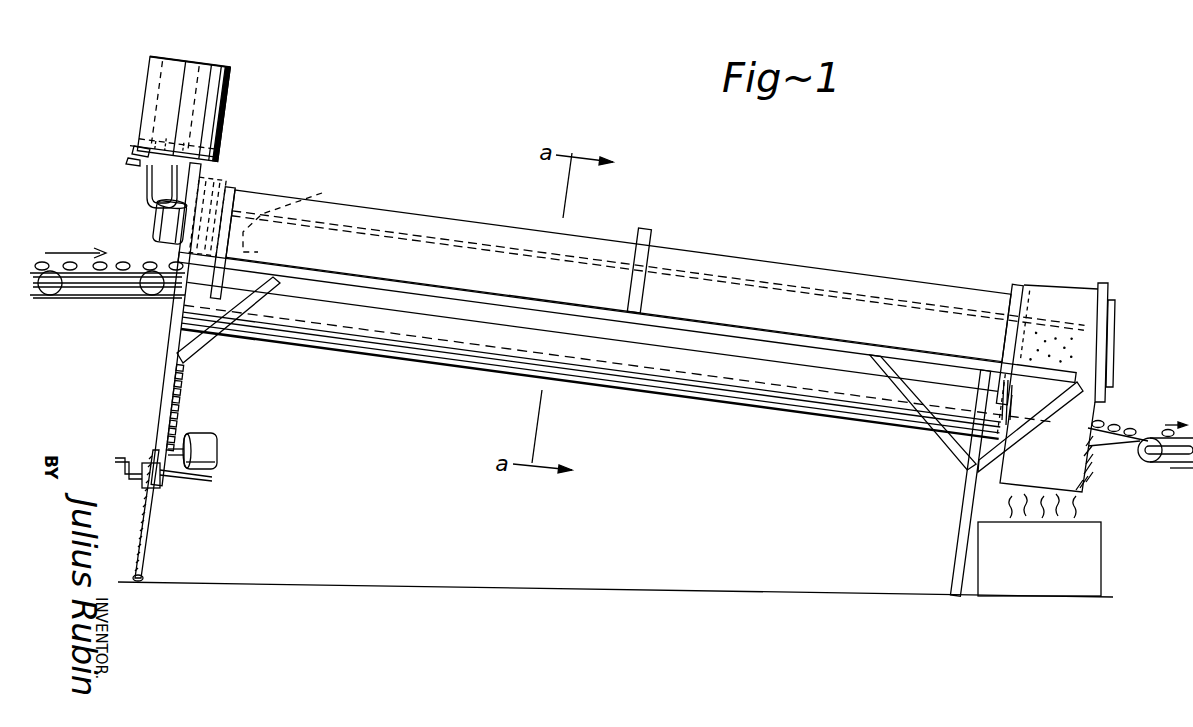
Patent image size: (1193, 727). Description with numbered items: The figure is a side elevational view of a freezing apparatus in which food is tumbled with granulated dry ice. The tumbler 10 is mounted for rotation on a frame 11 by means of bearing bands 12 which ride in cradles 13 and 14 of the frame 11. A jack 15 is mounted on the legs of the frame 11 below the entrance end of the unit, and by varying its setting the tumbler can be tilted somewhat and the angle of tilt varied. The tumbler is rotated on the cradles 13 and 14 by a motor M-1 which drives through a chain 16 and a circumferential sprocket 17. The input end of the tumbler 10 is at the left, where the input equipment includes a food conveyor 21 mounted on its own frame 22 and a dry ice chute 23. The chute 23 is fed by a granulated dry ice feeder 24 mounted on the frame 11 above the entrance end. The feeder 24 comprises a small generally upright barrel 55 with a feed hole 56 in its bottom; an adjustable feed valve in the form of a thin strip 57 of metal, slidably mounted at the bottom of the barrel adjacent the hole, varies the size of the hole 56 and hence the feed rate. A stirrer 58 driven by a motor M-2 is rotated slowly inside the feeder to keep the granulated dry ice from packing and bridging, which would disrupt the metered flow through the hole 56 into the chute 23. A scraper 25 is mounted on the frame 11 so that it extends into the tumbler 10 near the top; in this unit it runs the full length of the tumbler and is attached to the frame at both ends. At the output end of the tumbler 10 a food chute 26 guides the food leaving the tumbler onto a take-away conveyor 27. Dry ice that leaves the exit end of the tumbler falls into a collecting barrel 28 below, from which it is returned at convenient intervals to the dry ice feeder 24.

The tumbler 10 is at (783, 262).
The frame 11 is at (955, 527).
The bearing bands 12 is at (240, 192).
The cradle 13 is at (216, 345).
The cradle 14 is at (1000, 390).
The jack 15 is at (160, 488).
The chain 16 is at (181, 410).
The circumferential sprocket 17 is at (218, 182).
The food conveyor 21 is at (95, 268).
The frame 22 is at (92, 298).
The dry ice chute 23 is at (297, 211).
The granulated dry ice feeder 24 is at (146, 112).
The scraper 25 is at (482, 245).
The food chute 26 is at (1101, 440).
The take-away conveyor 27 is at (1166, 462).
The collecting barrel 28 is at (1102, 538).
The barrel 55 is at (232, 97).
The feed hole 56 is at (132, 148).
The thin strip 57 is at (130, 160).
The stirrer 58 is at (202, 62).
The motor M-1 is at (218, 450).
The motor M-2 is at (155, 232).